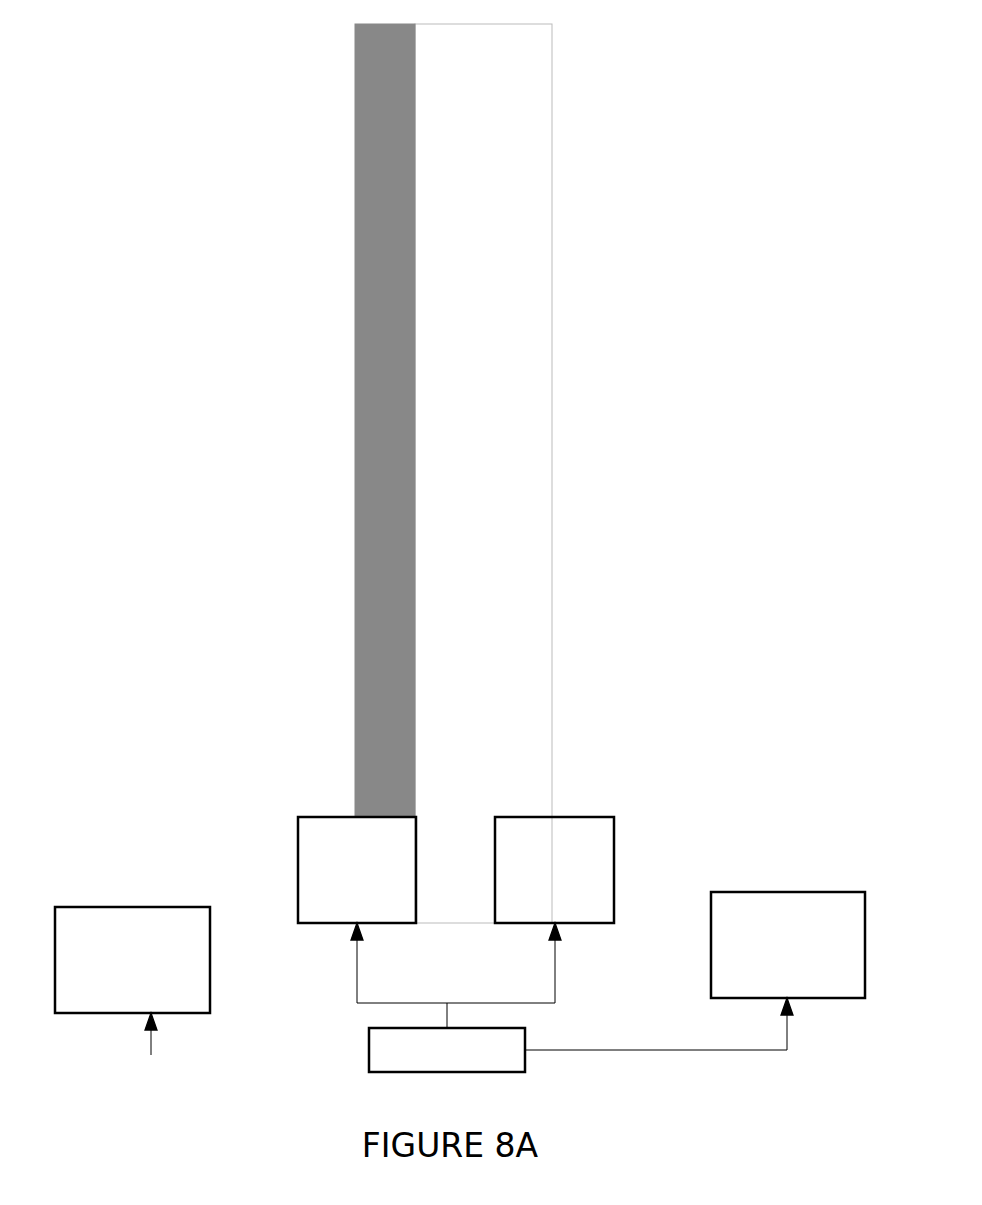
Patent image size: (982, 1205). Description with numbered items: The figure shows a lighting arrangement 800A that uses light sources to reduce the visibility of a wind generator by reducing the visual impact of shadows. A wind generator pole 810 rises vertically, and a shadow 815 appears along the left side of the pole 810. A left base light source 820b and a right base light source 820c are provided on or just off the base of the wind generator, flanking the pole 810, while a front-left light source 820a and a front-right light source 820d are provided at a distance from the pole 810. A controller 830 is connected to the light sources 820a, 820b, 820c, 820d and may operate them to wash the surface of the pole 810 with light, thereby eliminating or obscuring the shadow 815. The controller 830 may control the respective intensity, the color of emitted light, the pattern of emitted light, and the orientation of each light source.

The lighting arrangement 800A is at (454, 1104).
The wind generator pole 810 is at (550, 448).
The shadow 815 is at (377, 492).
The front-left light source 820a is at (138, 907).
The left base light source 820b is at (298, 882).
The right base light source 820c is at (614, 868).
The front-right light source 820d is at (790, 892).
The controller 830 is at (370, 1073).